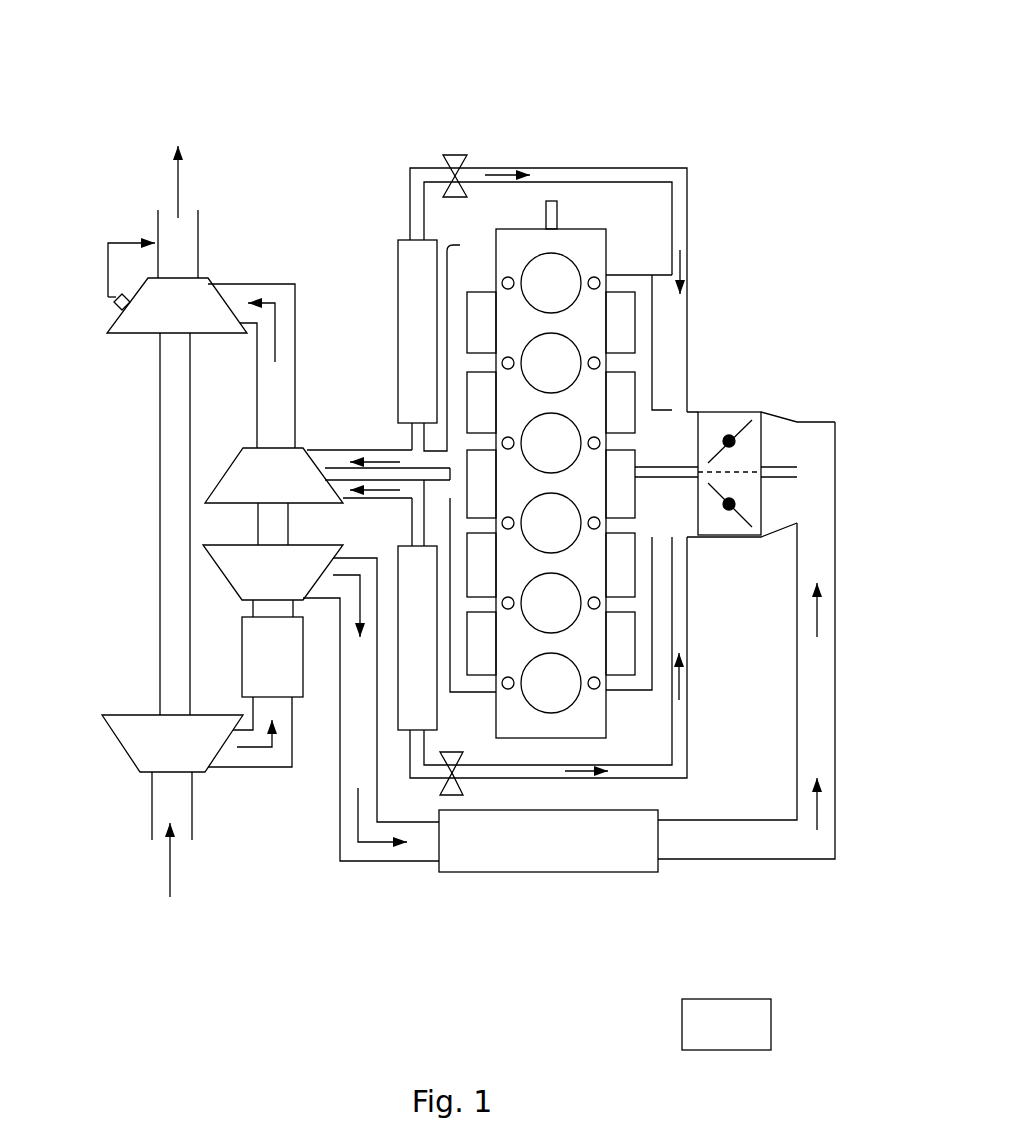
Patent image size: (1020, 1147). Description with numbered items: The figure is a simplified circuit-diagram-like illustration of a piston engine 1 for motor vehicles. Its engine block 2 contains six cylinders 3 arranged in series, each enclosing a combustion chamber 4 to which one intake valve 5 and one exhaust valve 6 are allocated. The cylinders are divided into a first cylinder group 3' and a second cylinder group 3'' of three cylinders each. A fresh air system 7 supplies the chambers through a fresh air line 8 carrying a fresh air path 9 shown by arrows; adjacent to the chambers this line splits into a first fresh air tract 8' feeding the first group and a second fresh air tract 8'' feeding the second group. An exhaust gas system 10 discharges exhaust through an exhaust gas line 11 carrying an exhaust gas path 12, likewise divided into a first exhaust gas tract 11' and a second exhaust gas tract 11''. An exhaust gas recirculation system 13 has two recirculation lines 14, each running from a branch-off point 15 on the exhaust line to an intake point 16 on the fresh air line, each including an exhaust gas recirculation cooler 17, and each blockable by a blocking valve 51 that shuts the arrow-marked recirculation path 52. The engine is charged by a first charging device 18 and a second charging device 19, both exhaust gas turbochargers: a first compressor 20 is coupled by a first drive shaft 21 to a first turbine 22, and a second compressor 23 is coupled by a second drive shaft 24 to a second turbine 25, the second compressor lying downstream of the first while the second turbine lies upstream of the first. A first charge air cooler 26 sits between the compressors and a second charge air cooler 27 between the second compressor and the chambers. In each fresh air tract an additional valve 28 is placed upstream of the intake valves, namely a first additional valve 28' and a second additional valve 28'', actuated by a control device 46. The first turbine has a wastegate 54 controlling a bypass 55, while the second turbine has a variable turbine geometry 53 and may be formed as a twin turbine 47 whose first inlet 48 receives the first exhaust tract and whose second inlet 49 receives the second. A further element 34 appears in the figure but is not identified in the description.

The piston engine 1 is at (738, 124).
The engine block 2 is at (585, 222).
The cylinders 3 is at (551, 436).
The first cylinder group 3' is at (402, 339).
The second cylinder group 3'' is at (399, 598).
The combustion chamber 4 is at (544, 296).
The intake valves 5 is at (600, 441).
The exhaust valves 6 is at (502, 441).
The fresh air system 7 is at (792, 862).
The fresh air line 8 is at (741, 906).
The first fresh air tract 8' is at (735, 436).
The second fresh air tract 8'' is at (742, 569).
The fresh air path 9 is at (345, 630).
The exhaust gas system 10 is at (252, 275).
The exhaust gas line 11 is at (292, 363).
The first exhaust gas tract 11' is at (338, 405).
The second exhaust gas tract 11'' is at (385, 522).
The exhaust gas path 12 is at (180, 172).
The exhaust gas recirculation system 13 is at (674, 786).
The recirculation line 14 is at (645, 166).
The branch-off point 15 is at (388, 450).
The intake point 16 is at (690, 408).
The exhaust gas recirculation cooler 17 is at (406, 304).
The first charging device 18 is at (120, 752).
The second charging device 19 is at (225, 582).
The first compressor 20 is at (159, 755).
The first drive shaft 21 is at (160, 520).
The first turbine 22 is at (164, 319).
The second compressor 23 is at (259, 585).
The second drive shaft 24 is at (270, 530).
The second turbine 25 is at (259, 487).
The first charge air cooler 26 is at (259, 669).
The second charge air cooler 27 is at (535, 852).
The additional valve 28 is at (756, 476).
The first additional valve 28' is at (767, 384).
The second additional valve 28'' is at (759, 565).
The sensor 34 is at (550, 200).
The control device 46 is at (713, 1039).
The twin turbine 47 is at (223, 448).
The first inlet 48 is at (318, 448).
The second inlet 49 is at (350, 500).
The blocking valve 51 is at (455, 152).
The recirculation path 52 is at (498, 168).
The variable turbine geometry 53 is at (317, 505).
The wastegate 54 is at (112, 307).
The bypass 55 is at (107, 240).